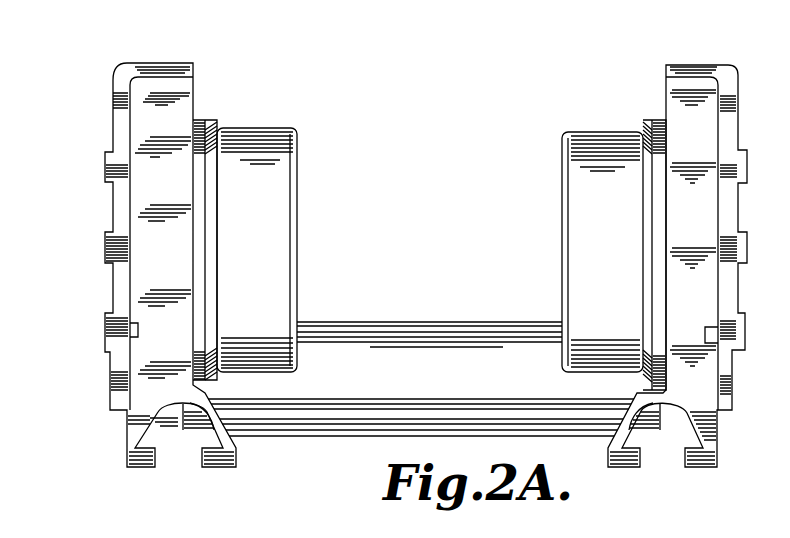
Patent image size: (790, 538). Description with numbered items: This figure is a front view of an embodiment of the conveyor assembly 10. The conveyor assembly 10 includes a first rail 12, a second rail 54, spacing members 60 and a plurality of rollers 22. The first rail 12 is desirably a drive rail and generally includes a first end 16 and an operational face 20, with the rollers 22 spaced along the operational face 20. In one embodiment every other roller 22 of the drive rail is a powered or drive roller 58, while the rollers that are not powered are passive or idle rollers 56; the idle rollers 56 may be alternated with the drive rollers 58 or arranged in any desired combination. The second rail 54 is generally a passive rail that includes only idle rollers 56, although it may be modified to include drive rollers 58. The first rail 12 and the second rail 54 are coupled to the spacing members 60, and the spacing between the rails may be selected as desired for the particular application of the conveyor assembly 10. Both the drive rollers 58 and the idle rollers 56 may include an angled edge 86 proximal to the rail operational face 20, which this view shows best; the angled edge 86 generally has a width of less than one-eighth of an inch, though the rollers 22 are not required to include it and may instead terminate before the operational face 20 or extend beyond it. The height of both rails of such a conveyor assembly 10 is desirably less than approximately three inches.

The conveyor assembly 10 is at (399, 251).
The first rail 12 is at (144, 242).
The first end 16 is at (150, 270).
The operational face 20 is at (197, 96).
The rollers 22 is at (430, 221).
The second rail 54 is at (703, 65).
The idle rollers 56 is at (570, 177).
The drive rollers 58 is at (292, 163).
The spacing members 60 is at (342, 340).
The angled edge 86 is at (648, 131).